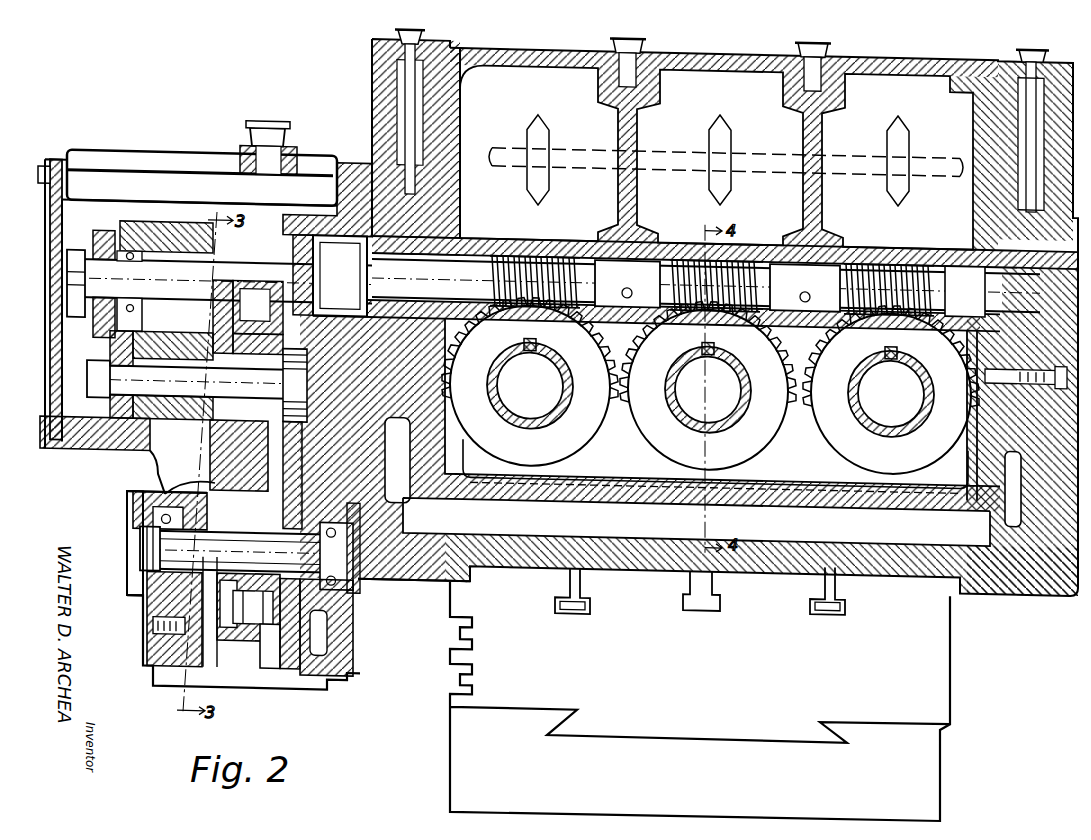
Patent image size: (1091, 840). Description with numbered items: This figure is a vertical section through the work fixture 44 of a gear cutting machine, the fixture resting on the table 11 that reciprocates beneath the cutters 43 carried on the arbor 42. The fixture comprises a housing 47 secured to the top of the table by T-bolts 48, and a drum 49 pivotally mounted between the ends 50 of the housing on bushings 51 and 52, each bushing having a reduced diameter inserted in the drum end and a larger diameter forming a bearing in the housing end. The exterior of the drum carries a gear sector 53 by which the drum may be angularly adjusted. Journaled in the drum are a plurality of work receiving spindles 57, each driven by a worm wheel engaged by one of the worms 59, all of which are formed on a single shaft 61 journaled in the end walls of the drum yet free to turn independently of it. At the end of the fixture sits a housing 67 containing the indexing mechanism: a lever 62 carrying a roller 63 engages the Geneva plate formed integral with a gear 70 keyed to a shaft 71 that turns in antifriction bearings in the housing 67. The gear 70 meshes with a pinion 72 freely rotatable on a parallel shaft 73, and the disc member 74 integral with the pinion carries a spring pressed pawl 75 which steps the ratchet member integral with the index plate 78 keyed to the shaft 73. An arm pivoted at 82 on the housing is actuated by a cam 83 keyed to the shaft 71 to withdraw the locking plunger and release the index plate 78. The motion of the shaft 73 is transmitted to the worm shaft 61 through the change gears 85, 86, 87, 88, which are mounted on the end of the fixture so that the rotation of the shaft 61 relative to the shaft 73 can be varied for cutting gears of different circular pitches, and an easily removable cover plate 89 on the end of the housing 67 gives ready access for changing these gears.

The table 11 is at (940, 665).
The arbor 42 is at (922, 154).
The cutters 43 is at (910, 132).
The work fixture 44 is at (1005, 585).
The housing 47 is at (382, 583).
The T-bolts 48 is at (582, 597).
The drum 49 is at (440, 50).
The ends of the housing 50 is at (378, 98).
The bushing 51 is at (465, 240).
The bushing 52 is at (985, 232).
The gear sector 53 is at (1050, 75).
The work receiving spindles 57 is at (548, 400).
The worms 59 is at (545, 252).
The shaft 61 is at (490, 250).
The lever 62 is at (249, 643).
The roller 63 is at (268, 667).
The housing 67 is at (127, 143).
The gear 70 is at (288, 667).
The shaft 71 is at (170, 545).
The pinion 72 is at (262, 490).
The shaft 73 is at (140, 458).
The disc member 74 is at (278, 280).
The spring pressed pawl 75 is at (240, 282).
The index plate 78 is at (150, 483).
The pivot 82 is at (147, 660).
The cam 83 is at (200, 516).
The change gear 85 is at (93, 243).
The change gear 86 is at (90, 335).
The change gear 87 is at (110, 345).
The change gear 88 is at (115, 410).
The cover plate 89 is at (50, 165).